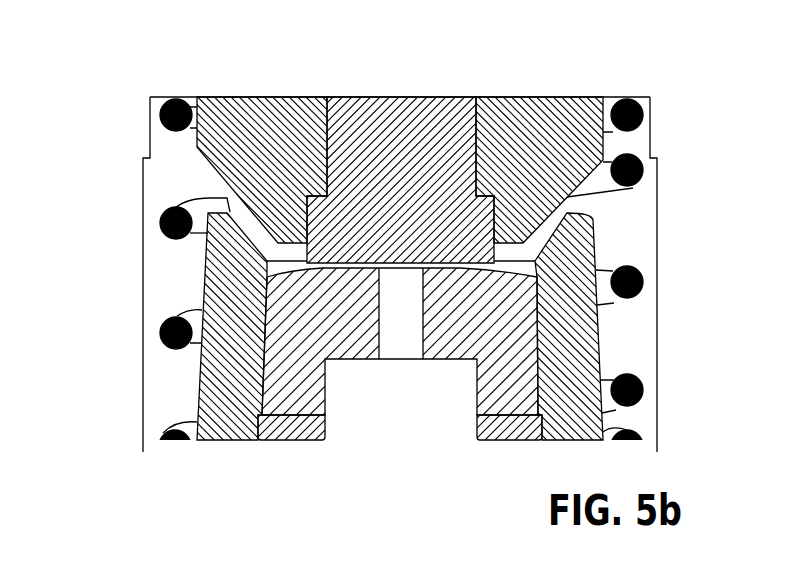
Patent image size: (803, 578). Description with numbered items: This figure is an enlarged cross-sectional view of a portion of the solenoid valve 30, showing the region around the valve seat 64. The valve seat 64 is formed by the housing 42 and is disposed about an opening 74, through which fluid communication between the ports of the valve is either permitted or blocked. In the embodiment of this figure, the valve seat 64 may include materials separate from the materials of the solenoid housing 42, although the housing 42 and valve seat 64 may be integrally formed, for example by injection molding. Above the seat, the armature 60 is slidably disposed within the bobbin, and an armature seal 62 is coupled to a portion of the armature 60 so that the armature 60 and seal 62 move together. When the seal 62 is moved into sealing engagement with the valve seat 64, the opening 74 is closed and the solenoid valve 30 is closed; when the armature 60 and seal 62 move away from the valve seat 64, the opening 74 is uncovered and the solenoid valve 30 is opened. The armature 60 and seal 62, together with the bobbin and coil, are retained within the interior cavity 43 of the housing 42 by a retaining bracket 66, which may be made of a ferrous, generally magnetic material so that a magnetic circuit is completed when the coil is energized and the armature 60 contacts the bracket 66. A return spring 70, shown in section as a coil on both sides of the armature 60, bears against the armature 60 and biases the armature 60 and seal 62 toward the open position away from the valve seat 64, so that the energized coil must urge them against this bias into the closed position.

The solenoid valve 30 is at (127, 112).
The housing 42 is at (508, 432).
The interior cavity 43 is at (173, 277).
The armature 60 is at (277, 145).
The armature seal 62 is at (405, 158).
The valve seat 64 is at (302, 392).
The retaining bracket 66 is at (230, 380).
The return spring 70 is at (640, 280).
The opening 74 is at (398, 327).